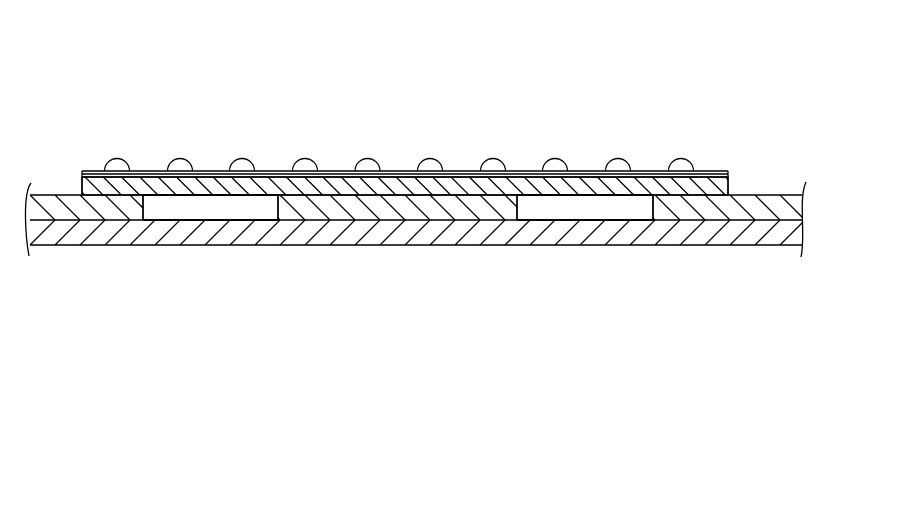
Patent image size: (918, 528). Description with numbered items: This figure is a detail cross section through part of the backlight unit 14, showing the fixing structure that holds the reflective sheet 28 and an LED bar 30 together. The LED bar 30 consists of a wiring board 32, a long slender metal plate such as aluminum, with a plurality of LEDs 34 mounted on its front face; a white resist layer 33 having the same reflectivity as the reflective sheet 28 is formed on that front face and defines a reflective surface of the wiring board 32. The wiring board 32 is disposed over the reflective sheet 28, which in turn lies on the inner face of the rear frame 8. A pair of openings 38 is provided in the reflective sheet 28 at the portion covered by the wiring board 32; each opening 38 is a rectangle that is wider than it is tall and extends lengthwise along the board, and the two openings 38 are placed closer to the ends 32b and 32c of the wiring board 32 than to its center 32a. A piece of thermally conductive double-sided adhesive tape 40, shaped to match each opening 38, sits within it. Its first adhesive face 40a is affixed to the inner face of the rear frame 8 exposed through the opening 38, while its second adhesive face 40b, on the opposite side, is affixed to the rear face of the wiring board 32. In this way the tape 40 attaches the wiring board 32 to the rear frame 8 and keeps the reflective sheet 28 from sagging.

The rear frame 8 is at (737, 233).
The backlight unit 14 is at (645, 78).
The reflective sheet 28 is at (756, 194).
The LED bar 30 is at (549, 53).
The wiring board 32 is at (524, 169).
The center of the wiring board 32a is at (403, 170).
The end of the wiring board 32b is at (716, 171).
The end of the wiring board 32c is at (95, 170).
The white resist layer 33 is at (333, 168).
The LED 34 is at (433, 160).
The opening 38 is at (153, 210).
The double-sided adhesive tape 40 is at (195, 210).
The first adhesive face 40a is at (228, 222).
The second adhesive face 40b is at (214, 195).